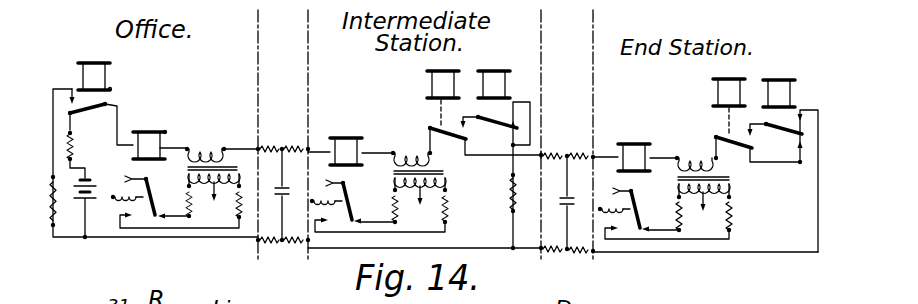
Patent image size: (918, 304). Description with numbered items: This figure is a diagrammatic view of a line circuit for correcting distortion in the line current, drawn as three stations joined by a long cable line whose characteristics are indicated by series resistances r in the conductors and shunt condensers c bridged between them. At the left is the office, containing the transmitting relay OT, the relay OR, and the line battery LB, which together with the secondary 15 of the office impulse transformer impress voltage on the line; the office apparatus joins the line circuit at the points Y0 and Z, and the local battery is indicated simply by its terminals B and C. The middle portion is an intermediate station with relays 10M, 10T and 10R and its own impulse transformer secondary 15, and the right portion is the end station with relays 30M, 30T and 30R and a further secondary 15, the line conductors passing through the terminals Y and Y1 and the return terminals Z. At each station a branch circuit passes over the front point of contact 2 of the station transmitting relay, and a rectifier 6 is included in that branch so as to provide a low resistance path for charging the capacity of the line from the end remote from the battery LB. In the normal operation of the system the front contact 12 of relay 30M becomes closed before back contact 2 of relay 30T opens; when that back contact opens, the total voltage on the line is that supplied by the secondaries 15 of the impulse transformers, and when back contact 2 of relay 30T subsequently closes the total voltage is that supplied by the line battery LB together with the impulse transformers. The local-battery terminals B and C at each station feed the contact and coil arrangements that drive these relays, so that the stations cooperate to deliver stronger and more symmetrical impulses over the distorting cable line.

The transmitting relay OT is at (95, 65).
The office receiving relay OR is at (150, 135).
The line battery LB is at (85, 204).
The impulse transformer secondary 15 is at (458, 163).
The battery terminal B is at (374, 199).
The battery terminal C is at (211, 203).
The line connection point Y0 is at (257, 147).
The line terminal Y is at (306, 146).
The line terminal Y1 is at (552, 143).
The series resistance r is at (425, 188).
The shunt condenser c is at (279, 190).
The line connection point Z is at (255, 243).
The intermediate station relay 10M is at (439, 89).
The intermediate station transmitting relay 10T is at (496, 74).
The intermediate station receiving relay 10R is at (348, 140).
The transmitting relay contact 2 is at (488, 114).
The rectifier 6 is at (537, 126).
The relay 30M is at (727, 96).
The transmitting relay 30T is at (782, 82).
The end station receiving relay 30R is at (636, 147).
The front contact 12 is at (722, 134).